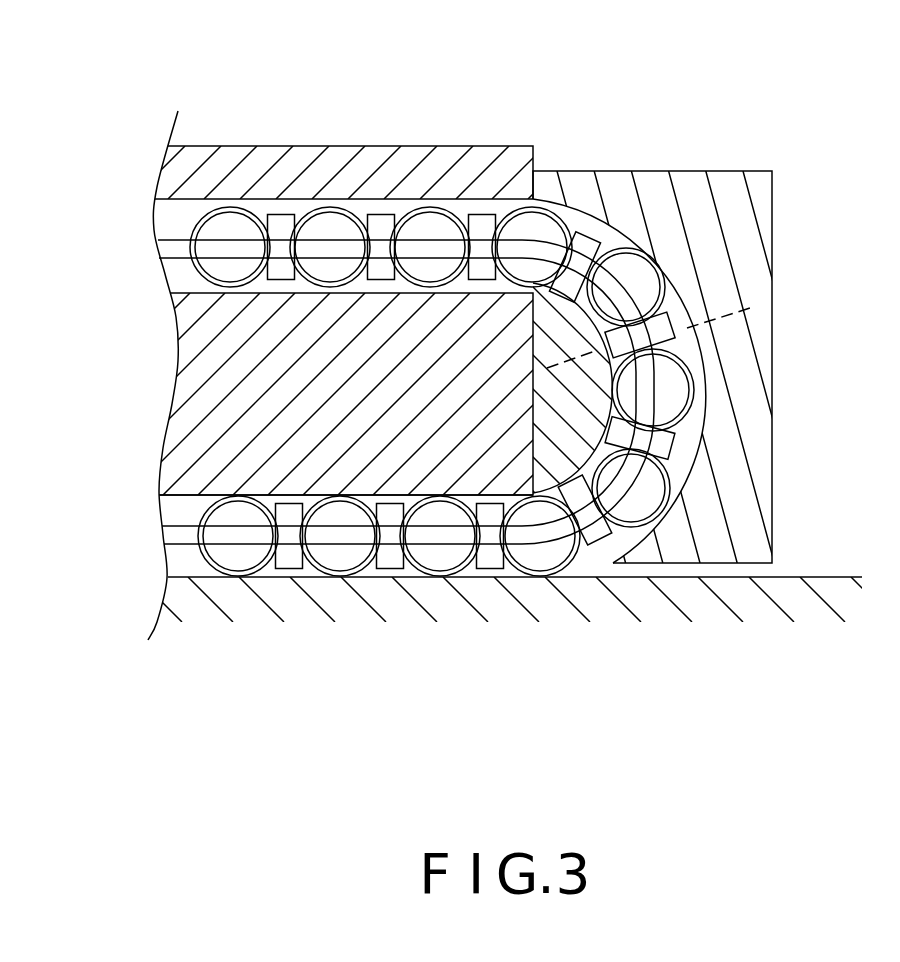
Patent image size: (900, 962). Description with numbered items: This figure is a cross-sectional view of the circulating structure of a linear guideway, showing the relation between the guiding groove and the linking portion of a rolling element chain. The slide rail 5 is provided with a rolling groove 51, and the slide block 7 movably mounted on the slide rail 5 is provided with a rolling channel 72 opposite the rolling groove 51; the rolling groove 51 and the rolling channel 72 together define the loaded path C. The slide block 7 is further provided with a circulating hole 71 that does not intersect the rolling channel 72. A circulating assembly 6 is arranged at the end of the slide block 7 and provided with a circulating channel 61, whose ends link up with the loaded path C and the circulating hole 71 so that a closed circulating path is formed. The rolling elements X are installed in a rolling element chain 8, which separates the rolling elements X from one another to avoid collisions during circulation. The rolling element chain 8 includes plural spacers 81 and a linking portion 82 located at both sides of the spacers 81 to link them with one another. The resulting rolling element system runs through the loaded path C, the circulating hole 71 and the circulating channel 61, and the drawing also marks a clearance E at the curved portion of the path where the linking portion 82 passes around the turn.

The slide rail 5 is at (547, 602).
The rolling groove 51 is at (370, 580).
The circulating assembly 6 is at (728, 188).
The circulating channel 61 is at (672, 297).
The slide block 7 is at (330, 162).
The circulating hole 71 is at (167, 214).
The rolling channel 72 is at (167, 507).
The rolling element chain 8 is at (168, 262).
The spacer 81 is at (662, 440).
The linking portion 82 is at (625, 477).
The rolling element X is at (427, 205).
The clearance E is at (575, 362).
The loaded path C is at (180, 559).